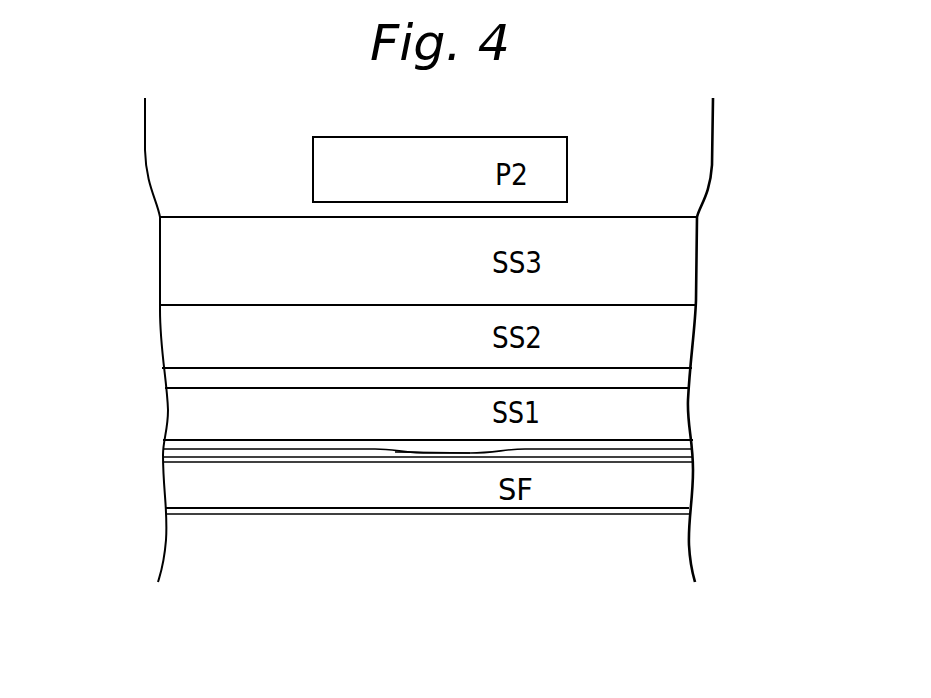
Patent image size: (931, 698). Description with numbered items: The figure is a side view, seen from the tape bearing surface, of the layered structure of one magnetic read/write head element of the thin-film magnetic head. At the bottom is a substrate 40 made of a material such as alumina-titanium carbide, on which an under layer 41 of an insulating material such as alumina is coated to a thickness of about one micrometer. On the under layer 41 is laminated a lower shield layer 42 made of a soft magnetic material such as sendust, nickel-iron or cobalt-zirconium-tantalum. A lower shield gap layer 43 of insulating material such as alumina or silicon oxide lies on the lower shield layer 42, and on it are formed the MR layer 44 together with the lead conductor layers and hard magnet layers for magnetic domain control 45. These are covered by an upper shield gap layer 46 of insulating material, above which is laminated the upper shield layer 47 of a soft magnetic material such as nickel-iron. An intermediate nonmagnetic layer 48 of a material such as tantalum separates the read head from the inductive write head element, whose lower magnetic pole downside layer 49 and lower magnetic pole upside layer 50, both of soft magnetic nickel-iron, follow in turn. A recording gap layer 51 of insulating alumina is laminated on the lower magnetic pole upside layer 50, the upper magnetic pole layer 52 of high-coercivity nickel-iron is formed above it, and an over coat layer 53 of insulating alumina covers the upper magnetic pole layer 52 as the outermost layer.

The substrate 40 is at (680, 555).
The under layer 41 is at (640, 513).
The lower shield layer 42 is at (685, 485).
The lower shield gap layer 43 is at (693, 462).
The MR layer 44 is at (432, 452).
The lead conductor layers and hard magnet layers for magnetic domain control 45 is at (695, 452).
The upper shield gap layer 46 is at (690, 446).
The upper shield layer 47 is at (680, 417).
The intermediate nonmagnetic layer 48 is at (680, 382).
The lower magnetic pole downside layer 49 is at (673, 340).
The lower magnetic pole upside layer 50 is at (672, 252).
The recording gap layer 51 is at (328, 210).
The upper magnetic pole layer 52 is at (567, 162).
The over coat layer 53 is at (700, 125).